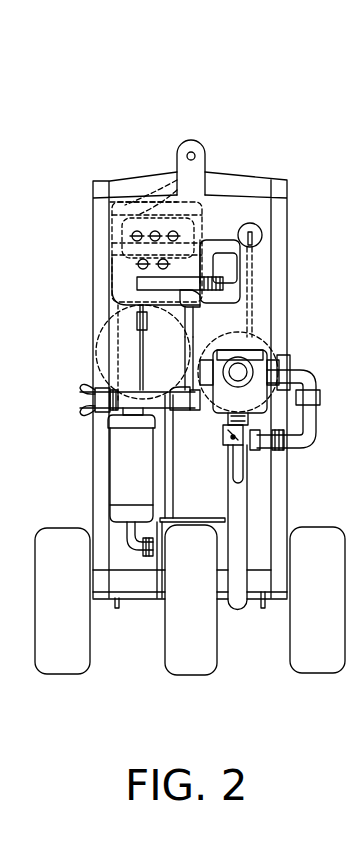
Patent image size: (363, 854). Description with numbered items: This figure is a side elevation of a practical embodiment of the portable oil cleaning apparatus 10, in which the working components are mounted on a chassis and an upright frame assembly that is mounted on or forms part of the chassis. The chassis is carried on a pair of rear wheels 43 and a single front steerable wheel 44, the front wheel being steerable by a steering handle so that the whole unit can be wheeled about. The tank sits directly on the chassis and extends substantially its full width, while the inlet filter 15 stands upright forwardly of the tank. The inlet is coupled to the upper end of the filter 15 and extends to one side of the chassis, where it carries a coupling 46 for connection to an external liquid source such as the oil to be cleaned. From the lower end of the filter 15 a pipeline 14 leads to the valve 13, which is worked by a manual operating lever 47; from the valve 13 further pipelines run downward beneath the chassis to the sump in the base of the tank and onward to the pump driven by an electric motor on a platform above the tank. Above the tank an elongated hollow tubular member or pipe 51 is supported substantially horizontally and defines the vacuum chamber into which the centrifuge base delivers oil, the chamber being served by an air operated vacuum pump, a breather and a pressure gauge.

The apparatus 10 is at (86, 113).
The valve 13 is at (268, 340).
The pipeline 14 is at (168, 472).
The inlet filter 15 is at (137, 547).
The rear wheels 43 is at (70, 660).
The front steerable wheel 44 is at (205, 662).
The coupling 46 is at (92, 400).
The manual operating lever 47 is at (245, 468).
The pipe 51 is at (108, 334).